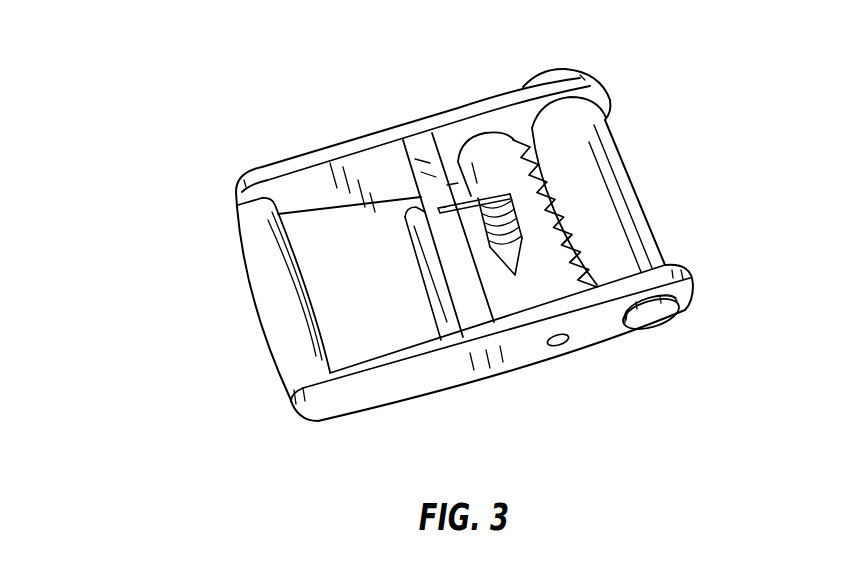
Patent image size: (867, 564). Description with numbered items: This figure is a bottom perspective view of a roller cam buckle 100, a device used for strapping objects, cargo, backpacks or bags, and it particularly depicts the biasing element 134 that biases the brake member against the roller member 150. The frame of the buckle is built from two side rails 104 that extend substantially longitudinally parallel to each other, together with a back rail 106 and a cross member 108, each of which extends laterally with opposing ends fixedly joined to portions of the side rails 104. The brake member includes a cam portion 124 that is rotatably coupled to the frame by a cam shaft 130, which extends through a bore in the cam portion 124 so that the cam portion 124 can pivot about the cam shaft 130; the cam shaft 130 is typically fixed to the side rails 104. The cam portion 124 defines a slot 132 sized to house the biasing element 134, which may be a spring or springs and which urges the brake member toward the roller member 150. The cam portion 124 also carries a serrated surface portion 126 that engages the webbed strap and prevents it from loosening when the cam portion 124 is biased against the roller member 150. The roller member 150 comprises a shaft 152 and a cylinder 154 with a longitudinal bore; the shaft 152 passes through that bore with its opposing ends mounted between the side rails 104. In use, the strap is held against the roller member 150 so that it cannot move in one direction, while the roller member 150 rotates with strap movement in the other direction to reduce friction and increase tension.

The roller cam buckle 100 is at (191, 402).
The side rails 104 is at (315, 186).
The back rail 106 is at (260, 274).
The cross member 108 is at (421, 120).
The cam portion 124 is at (504, 150).
The serrated surface portion 126 is at (596, 258).
The cam shaft 130 is at (556, 345).
The slot 132 is at (496, 138).
The biasing element 134 is at (509, 255).
The roller member 150 is at (651, 204).
The shaft 152 is at (653, 325).
The cylinder 154 is at (613, 167).